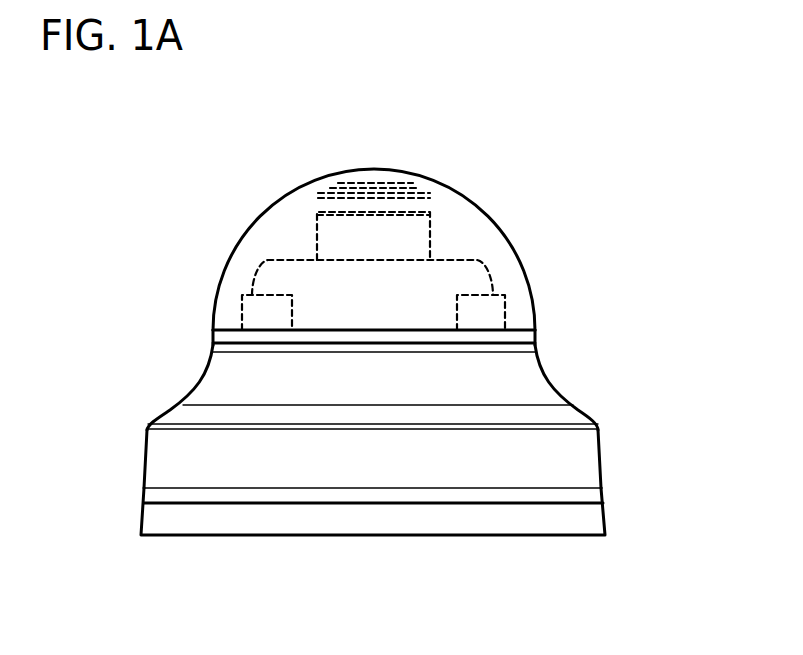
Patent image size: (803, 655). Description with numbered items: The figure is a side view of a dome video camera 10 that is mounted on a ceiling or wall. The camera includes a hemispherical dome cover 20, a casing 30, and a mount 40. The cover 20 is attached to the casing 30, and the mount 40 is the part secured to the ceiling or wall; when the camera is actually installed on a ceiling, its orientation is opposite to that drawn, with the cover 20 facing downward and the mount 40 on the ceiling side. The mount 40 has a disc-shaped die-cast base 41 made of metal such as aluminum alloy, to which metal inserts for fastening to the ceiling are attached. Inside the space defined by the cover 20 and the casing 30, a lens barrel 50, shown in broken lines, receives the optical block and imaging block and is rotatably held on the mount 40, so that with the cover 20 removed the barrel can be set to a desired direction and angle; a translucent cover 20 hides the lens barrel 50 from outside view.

The dome video camera 10 is at (328, 142).
The dome cover 20 is at (507, 277).
The casing 30 is at (552, 460).
The mount 40 is at (373, 557).
The base 41 is at (548, 518).
The lens barrel 50 is at (407, 238).